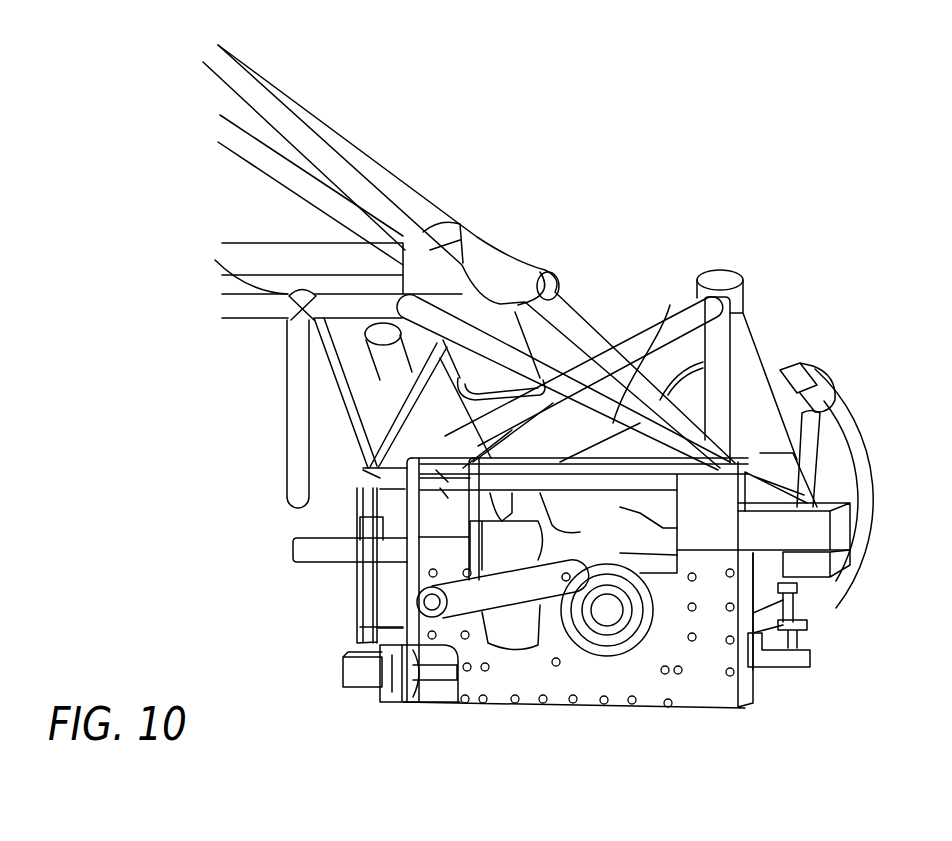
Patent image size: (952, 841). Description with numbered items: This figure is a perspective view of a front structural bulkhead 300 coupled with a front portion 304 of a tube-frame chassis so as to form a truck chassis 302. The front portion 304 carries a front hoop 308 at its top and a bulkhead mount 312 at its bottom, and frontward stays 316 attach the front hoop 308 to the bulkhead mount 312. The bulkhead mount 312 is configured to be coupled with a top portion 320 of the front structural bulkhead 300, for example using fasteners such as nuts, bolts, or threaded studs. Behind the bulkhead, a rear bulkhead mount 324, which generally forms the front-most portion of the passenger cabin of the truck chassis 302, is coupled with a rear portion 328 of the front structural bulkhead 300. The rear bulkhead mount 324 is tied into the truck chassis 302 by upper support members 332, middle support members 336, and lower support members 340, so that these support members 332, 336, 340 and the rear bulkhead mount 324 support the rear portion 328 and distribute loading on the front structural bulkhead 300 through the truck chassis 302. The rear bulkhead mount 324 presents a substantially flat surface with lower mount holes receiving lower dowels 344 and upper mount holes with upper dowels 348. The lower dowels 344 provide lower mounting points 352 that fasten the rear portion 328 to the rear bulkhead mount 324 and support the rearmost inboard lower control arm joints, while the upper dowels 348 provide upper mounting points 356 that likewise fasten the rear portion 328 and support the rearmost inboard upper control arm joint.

The front structural bulkhead 300 is at (652, 710).
The truck chassis 302 is at (300, 365).
The front portion 304 is at (800, 323).
The front hoop 308 is at (362, 296).
The bulkhead mount 312 is at (740, 463).
The frontward stays 316 is at (648, 403).
The top portion 320 is at (587, 463).
The rear bulkhead mount 324 is at (402, 583).
The rear portion 328 is at (378, 628).
The upper support members 332 is at (373, 475).
The middle support members 336 is at (327, 550).
The lower support members 340 is at (358, 675).
The lower dowels 344 is at (434, 672).
The upper dowels 348 is at (442, 493).
The lower mounting points 352 is at (440, 703).
The upper mounting points 356 is at (443, 480).